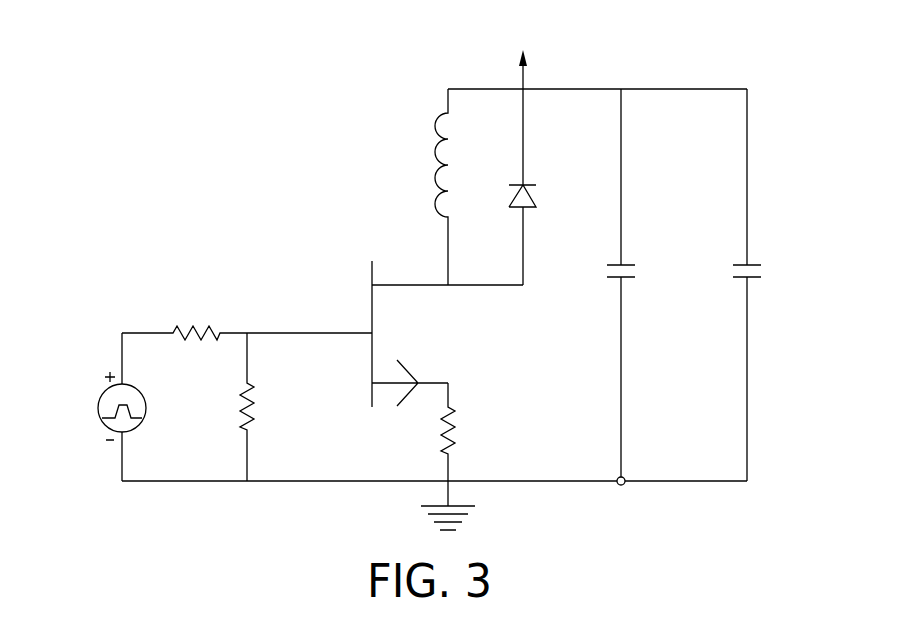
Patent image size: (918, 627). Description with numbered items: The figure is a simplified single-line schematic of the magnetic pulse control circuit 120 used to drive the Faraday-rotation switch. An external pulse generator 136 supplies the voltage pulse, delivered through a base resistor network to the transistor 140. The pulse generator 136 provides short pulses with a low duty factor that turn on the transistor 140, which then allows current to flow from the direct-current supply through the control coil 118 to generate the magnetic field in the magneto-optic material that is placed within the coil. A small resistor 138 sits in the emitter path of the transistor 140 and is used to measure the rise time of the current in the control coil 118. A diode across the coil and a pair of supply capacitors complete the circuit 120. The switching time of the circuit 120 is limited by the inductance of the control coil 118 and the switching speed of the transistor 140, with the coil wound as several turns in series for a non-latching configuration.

The control coil 118 is at (441, 113).
The magnetic pulse control circuit 120 is at (228, 168).
The pulse generator 136 is at (98, 397).
The resistor 138 is at (452, 410).
The transistor 140 is at (372, 305).